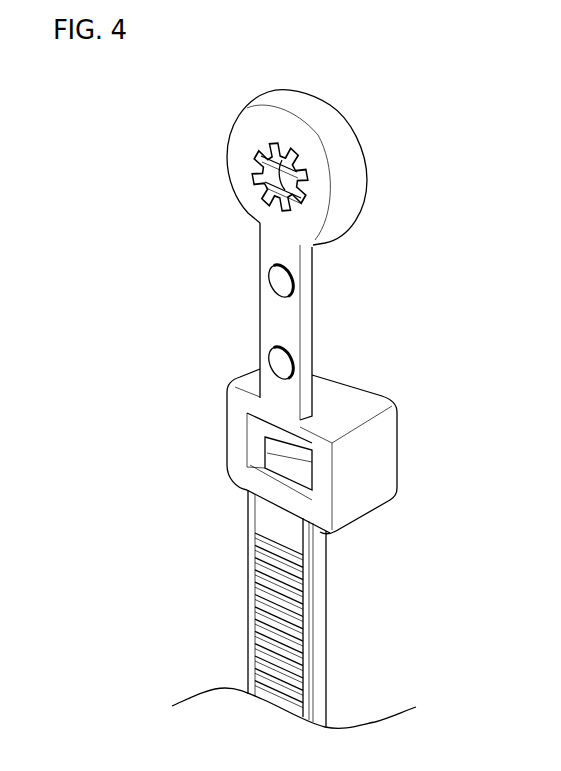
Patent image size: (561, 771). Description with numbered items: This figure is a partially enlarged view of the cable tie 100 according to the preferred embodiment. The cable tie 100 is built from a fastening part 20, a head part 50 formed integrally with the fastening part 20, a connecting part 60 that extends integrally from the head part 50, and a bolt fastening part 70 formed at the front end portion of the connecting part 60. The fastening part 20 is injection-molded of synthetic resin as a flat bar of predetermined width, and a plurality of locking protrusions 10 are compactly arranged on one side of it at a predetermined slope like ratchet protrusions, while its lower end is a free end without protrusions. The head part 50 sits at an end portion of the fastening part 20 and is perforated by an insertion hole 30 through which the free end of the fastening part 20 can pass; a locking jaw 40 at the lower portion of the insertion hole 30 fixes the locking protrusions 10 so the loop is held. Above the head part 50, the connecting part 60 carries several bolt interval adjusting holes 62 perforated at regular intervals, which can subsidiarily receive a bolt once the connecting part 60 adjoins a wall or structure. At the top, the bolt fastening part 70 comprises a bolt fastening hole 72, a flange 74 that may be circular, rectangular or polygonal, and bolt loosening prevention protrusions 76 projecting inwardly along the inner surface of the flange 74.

The cable tie 100 is at (132, 332).
The bolt fastening part 70 is at (390, 147).
The flange 74 is at (327, 132).
The bolt loosening prevention protrusions 76 is at (258, 152).
The bolt fastening hole 72 is at (258, 187).
The connecting part 60 is at (290, 326).
The bolt interval adjusting holes 62 is at (268, 280).
The head part 50 is at (385, 455).
The insertion hole 30 is at (257, 432).
The locking jaw 40 is at (276, 450).
The locking protrusions 10 is at (265, 596).
The fastening part 20 is at (322, 612).